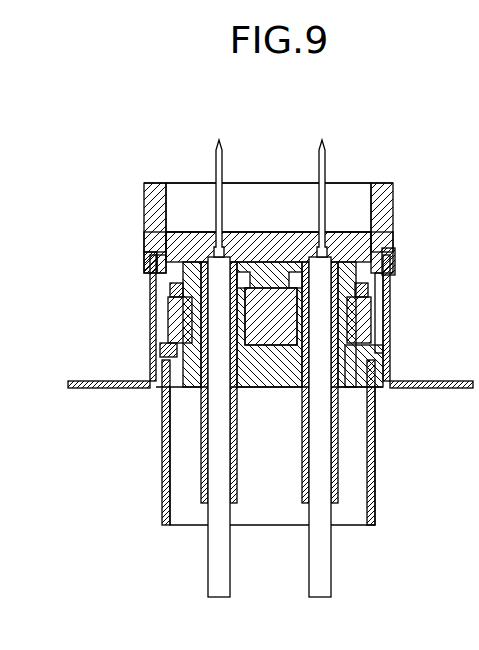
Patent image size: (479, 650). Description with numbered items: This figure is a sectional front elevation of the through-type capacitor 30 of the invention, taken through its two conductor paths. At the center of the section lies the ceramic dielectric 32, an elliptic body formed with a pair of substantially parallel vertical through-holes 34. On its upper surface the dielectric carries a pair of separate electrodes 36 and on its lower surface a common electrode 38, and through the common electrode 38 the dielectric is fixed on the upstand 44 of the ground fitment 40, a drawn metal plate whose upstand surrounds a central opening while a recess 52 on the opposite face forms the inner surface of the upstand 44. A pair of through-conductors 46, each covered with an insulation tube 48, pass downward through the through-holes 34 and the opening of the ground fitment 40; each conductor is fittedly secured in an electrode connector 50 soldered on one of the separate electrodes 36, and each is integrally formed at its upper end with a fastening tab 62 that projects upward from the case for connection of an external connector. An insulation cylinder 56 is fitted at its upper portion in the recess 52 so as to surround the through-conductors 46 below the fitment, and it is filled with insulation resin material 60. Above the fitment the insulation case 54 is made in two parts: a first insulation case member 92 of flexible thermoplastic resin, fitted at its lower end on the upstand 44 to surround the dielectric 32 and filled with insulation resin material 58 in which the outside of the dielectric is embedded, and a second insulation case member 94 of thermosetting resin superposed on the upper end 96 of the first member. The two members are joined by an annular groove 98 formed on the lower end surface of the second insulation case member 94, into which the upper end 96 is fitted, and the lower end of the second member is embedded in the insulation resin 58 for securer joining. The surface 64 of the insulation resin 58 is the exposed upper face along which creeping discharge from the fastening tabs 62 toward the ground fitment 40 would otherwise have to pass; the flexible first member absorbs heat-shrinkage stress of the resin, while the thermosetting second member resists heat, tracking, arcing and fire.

The through-type capacitor 30 is at (385, 156).
The ceramic dielectric 32 is at (152, 320).
The through-holes 34 is at (165, 395).
The separate electrodes 36 is at (170, 300).
The common electrode 38 is at (172, 343).
The ground fitment 40 is at (120, 388).
The upstand 44 is at (371, 340).
The through-conductors 46 is at (216, 552).
The insulation tube 48 is at (203, 456).
The electrode connector 50 is at (160, 262).
The recess 52 is at (363, 369).
The insulation case 54 is at (132, 206).
The insulation cylinder 56 is at (376, 491).
The insulation resin material 58 is at (275, 230).
The insulation resin material 60 is at (276, 368).
The fastening tab 62 is at (217, 154).
The surface of the insulation resin 64 is at (198, 230).
The first insulation case member 92 is at (385, 310).
The second insulation case member 94 is at (393, 232).
The upper end 96 is at (160, 248).
The annular groove 98 is at (154, 268).